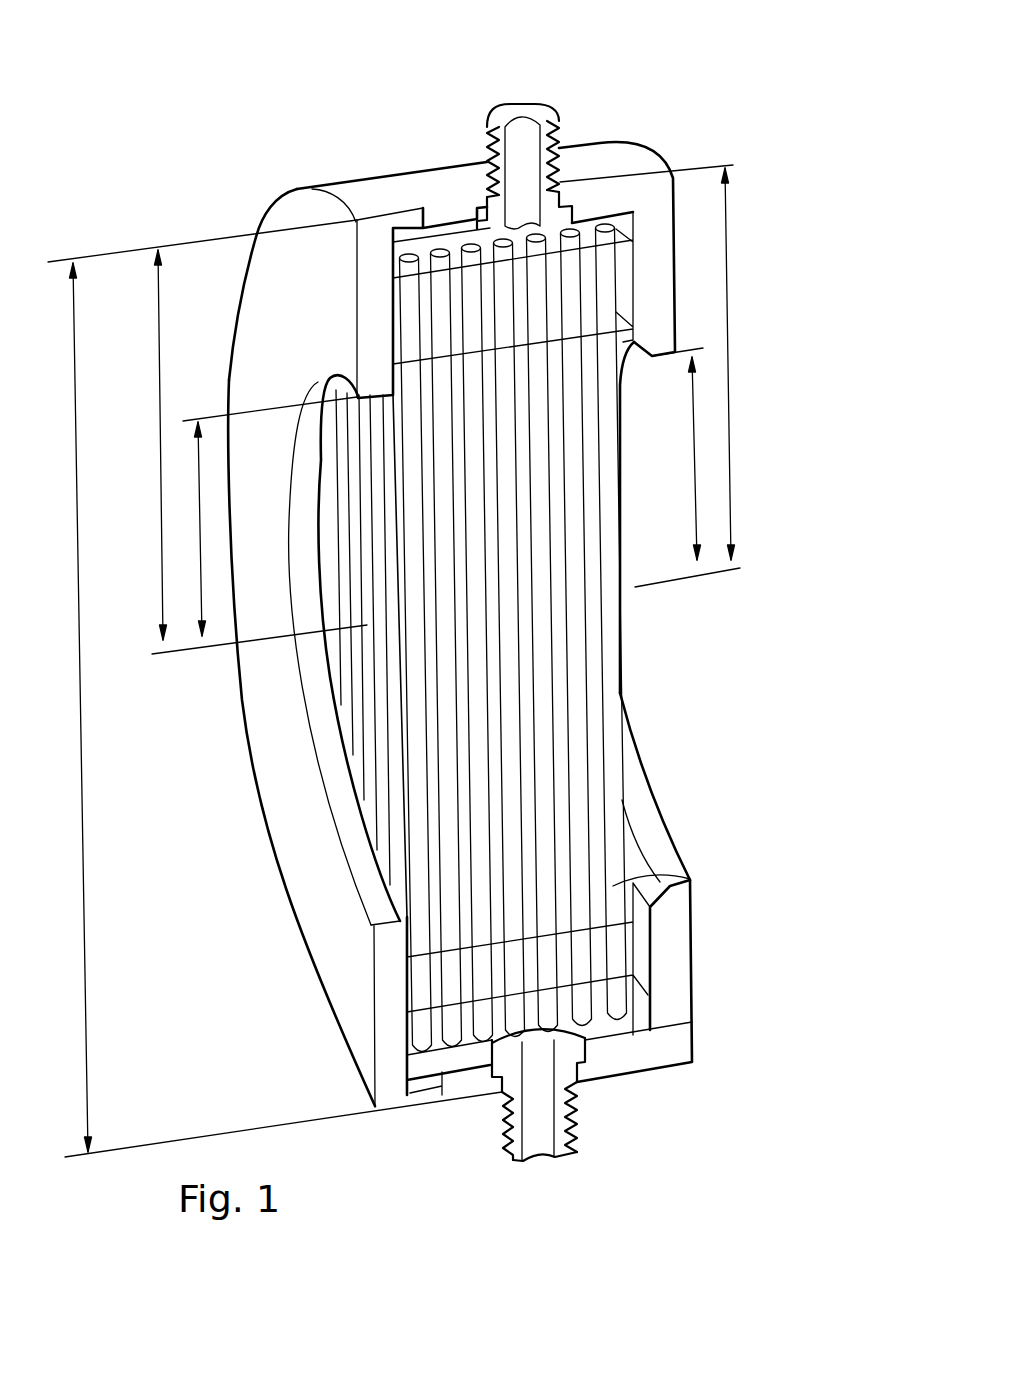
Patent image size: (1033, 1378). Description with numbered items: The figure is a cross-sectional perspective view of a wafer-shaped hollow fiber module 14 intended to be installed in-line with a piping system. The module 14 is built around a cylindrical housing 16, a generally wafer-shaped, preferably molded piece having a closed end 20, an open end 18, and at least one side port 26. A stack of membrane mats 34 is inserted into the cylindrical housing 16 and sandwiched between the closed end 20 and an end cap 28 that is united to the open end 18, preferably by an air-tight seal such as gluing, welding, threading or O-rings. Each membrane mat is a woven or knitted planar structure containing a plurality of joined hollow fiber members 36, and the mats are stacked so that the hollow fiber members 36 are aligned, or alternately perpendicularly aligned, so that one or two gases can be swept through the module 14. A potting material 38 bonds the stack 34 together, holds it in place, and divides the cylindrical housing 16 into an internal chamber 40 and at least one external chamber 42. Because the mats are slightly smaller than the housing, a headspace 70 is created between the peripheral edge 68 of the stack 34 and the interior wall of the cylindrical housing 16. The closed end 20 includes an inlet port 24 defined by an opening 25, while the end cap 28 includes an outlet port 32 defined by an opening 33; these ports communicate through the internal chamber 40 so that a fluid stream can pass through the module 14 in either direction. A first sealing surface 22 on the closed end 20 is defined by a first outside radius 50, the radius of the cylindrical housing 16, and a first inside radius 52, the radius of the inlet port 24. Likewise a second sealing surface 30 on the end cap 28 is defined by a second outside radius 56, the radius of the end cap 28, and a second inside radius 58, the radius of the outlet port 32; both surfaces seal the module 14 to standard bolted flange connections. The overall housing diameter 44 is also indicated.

The wafer-shaped hollow fiber module 14 is at (352, 42).
The cylindrical housing 16 is at (452, 255).
The open end 18 is at (192, 750).
The closed end 20 is at (780, 718).
The first sealing surface 22 is at (563, 1022).
The inlet port 24 is at (721, 805).
The opening 25 is at (648, 823).
The side port 26 is at (520, 132).
The end cap 28 is at (355, 190).
The second sealing surface 30 is at (313, 887).
The outlet port 32 is at (323, 753).
The opening 33 is at (267, 801).
The stack of membrane mats 34 is at (663, 609).
The hollow fiber members 36 is at (660, 880).
The potting material 38 is at (622, 263).
The internal chamber 40 is at (500, 717).
The external chamber 42 is at (587, 216).
The housing diameter 44 is at (76, 846).
The first outside radius 50 is at (727, 232).
The first inside radius 52 is at (735, 432).
The second outside radius 56 is at (157, 342).
The second inside radius 58 is at (197, 502).
The peripheral edge 68 is at (410, 1090).
The headspace 70 is at (457, 1057).